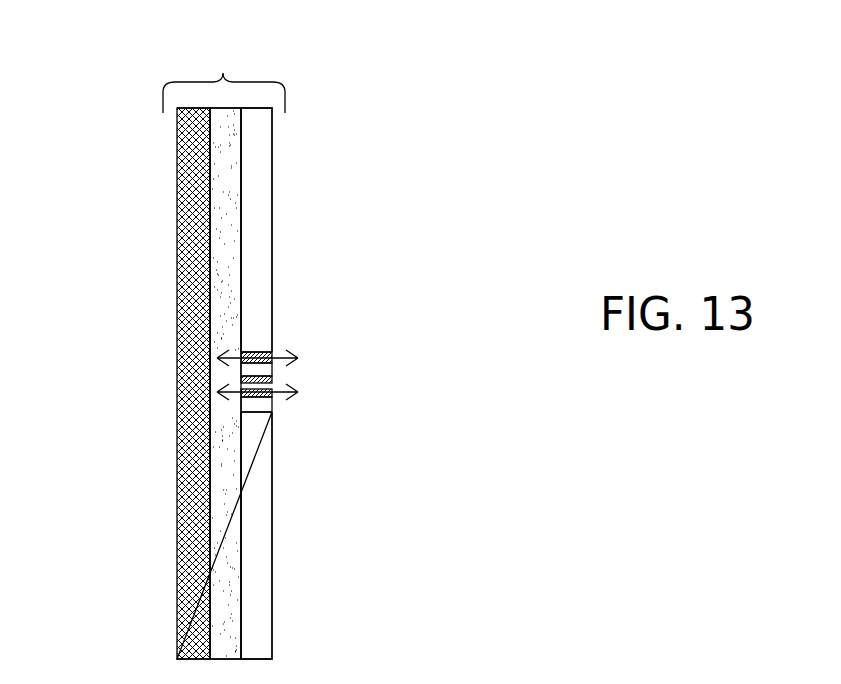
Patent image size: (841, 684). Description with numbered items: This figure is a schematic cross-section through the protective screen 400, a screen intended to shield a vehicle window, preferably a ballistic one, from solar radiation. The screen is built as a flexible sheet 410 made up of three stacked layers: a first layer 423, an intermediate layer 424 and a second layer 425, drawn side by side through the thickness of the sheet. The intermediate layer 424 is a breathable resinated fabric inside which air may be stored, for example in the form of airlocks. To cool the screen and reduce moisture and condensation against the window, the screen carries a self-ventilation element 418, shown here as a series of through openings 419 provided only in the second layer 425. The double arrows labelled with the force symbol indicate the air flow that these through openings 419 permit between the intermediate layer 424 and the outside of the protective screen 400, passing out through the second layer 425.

The protective screen 400 is at (368, 241).
The flexible sheet 410 is at (223, 73).
The self-ventilation element 418 is at (338, 378).
The through openings 419 is at (266, 352).
The first layer 423 is at (177, 240).
The intermediate layer 424 is at (228, 513).
The second layer 425 is at (272, 610).